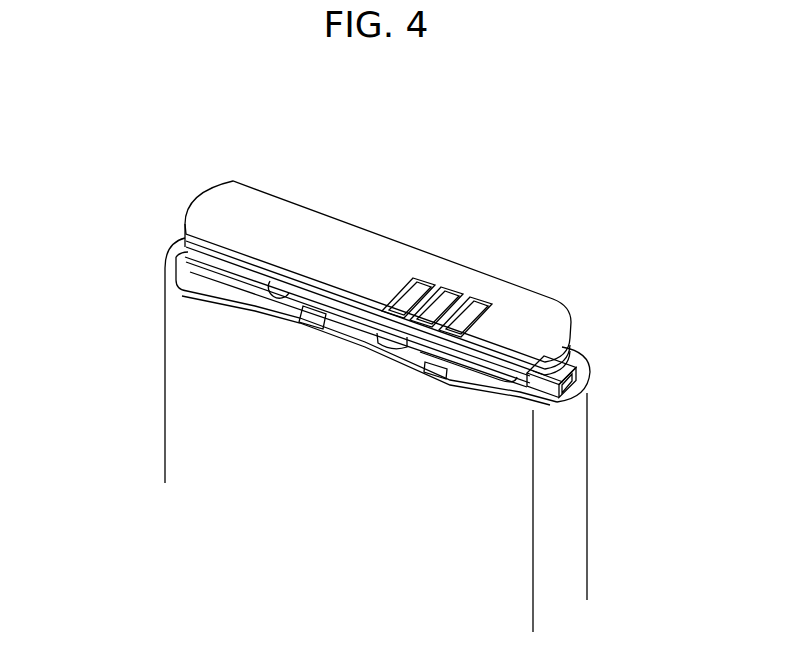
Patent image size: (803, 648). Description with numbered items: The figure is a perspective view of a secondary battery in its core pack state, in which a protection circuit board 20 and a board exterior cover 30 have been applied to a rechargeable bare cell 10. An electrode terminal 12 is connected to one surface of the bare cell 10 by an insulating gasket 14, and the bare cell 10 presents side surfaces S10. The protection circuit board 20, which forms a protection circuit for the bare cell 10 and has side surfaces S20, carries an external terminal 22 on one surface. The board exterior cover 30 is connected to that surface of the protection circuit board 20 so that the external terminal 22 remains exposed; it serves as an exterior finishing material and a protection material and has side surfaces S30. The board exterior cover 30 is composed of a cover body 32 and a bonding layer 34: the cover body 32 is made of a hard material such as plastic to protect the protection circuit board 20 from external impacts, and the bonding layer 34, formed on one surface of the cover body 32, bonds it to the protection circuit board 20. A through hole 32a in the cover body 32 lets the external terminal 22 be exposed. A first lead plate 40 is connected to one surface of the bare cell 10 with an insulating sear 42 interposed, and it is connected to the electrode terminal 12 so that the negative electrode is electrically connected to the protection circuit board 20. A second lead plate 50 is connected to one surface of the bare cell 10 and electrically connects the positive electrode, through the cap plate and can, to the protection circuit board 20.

The bare cell 10 is at (574, 443).
The electrode terminal 12 is at (370, 333).
The insulating gasket 14 is at (327, 318).
The protection circuit board 20 is at (265, 302).
The external terminal 22 is at (460, 333).
The board exterior cover 30 is at (338, 259).
The cover body 32 is at (370, 241).
The through hole 32a is at (455, 292).
The bonding layer 34 is at (183, 237).
The first lead plate 40 is at (180, 270).
The insulating sear 42 is at (185, 268).
The second lead plate 50 is at (578, 358).
The side surfaces of the bare cell S10 is at (433, 520).
The side surfaces of the protection circuit board S20 is at (422, 335).
The side surfaces of the board exterior cover S30 is at (310, 286).